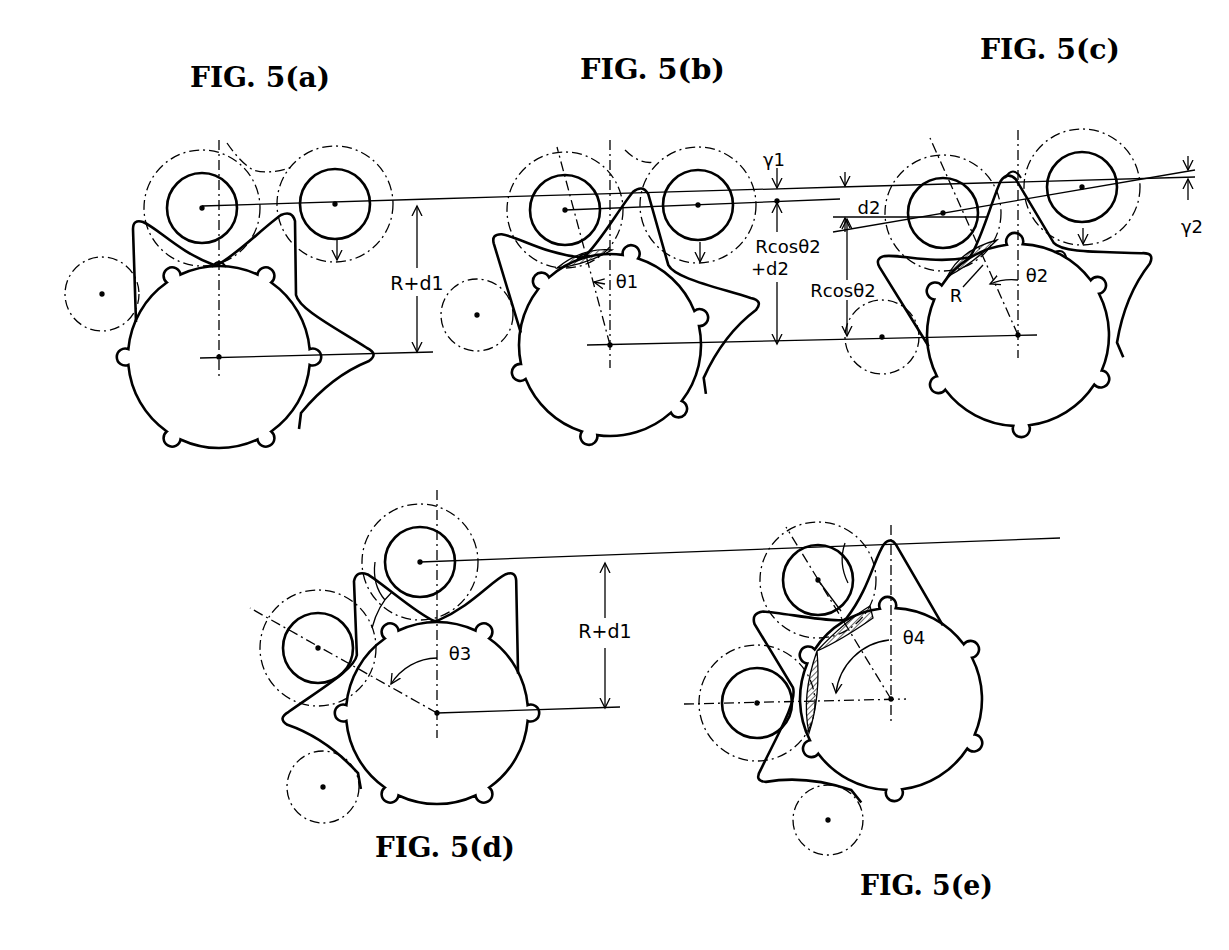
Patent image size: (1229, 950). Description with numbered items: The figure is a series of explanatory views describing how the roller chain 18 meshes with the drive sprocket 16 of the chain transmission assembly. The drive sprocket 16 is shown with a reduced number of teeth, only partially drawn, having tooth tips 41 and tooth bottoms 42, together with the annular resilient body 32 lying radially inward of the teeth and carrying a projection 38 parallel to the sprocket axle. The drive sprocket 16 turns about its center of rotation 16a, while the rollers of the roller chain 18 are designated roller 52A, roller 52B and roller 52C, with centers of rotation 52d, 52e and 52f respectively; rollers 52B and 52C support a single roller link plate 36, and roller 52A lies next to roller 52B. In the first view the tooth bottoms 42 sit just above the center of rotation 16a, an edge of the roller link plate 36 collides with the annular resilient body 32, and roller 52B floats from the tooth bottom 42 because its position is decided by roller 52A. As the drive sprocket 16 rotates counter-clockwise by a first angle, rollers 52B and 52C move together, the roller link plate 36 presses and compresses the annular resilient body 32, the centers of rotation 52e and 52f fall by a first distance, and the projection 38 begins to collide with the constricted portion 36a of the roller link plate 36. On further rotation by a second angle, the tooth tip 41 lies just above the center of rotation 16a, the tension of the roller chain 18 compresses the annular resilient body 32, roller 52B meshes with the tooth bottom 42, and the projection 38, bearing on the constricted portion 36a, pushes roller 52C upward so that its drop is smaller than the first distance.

In FIG. 5A, the drive sprocket 16 is at (308, 405).
In FIG. 5B, the drive sprocket 16 is at (708, 369).
In FIG. 5C, the drive sprocket 16 is at (1126, 319).
In FIG. 5D, the drive sprocket 16 is at (522, 645).
In FIG. 5E, the drive sprocket 16 is at (940, 603).
In FIG. 5A, the center of rotation 16a is at (217, 358).
In FIG. 5B, the center of rotation 16a is at (607, 350).
In FIG. 5C, the center of rotation 16a is at (1015, 337).
In FIG. 5D, the center of rotation 16a is at (433, 717).
In FIG. 5E, the center of rotation 16a is at (889, 706).
In FIG. 5A, the roller chain 18 is at (361, 189).
In FIG. 5B, the roller chain 18 is at (703, 185).
In FIG. 5C, the roller chain 18 is at (1106, 171).
In FIG. 5D, the roller chain 18 is at (427, 545).
In FIG. 5E, the roller chain 18 is at (816, 560).
In FIG. 5A, the annular resilient body 32 is at (157, 430).
In FIG. 5B, the annular resilient body 32 is at (537, 403).
In FIG. 5C, the annular resilient body 32 is at (963, 409).
In FIG. 5D, the annular resilient body 32 is at (508, 779).
In FIG. 5E, the annular resilient body 32 is at (960, 765).
In FIG. 5A, the roller link plate 36 is at (270, 162).
In FIG. 5B, the roller link plate 36 is at (647, 160).
In FIG. 5A, the constricted portion 36a is at (207, 268).
In FIG. 5B, the constricted portion 36a is at (650, 255).
In FIG. 5C, the constricted portion 36a is at (1053, 252).
In FIG. 5B, the projection 38 is at (606, 176).
In FIG. 5C, the projection 38 is at (1035, 160).
In FIG. 5D, the projection 38 is at (350, 582).
In FIG. 5E, the projection 38 is at (892, 595).
In FIG. 5C, the tooth tip 41 is at (1002, 165).
In FIG. 5A, the tooth bottom 42 is at (249, 165).
In FIG. 5C, the tooth bottom 42 is at (961, 165).
In FIG. 5D, the tooth bottom 42 is at (372, 553).
In FIG. 5E, the tooth bottom 42 is at (843, 535).
In FIG. 5A, the roller 52A is at (80, 256).
In FIG. 5B, the roller 52A is at (474, 278).
In FIG. 5C, the roller 52A is at (855, 362).
In FIG. 5D, the roller 52A is at (293, 802).
In FIG. 5E, the roller 52A is at (793, 826).
In FIG. 5A, the roller 52B is at (188, 175).
In FIG. 5B, the roller 52B is at (548, 170).
In FIG. 5C, the roller 52B is at (937, 160).
In FIG. 5D, the roller 52B is at (280, 641).
In FIG. 5E, the roller 52B is at (726, 678).
In FIG. 5A, the roller 52C is at (337, 168).
In FIG. 5B, the roller 52C is at (697, 170).
In FIG. 5C, the roller 52C is at (1055, 135).
In FIG. 5D, the roller 52C is at (460, 545).
In FIG. 5E, the roller 52C is at (811, 538).
In FIG. 5A, the center of rotation 52d is at (103, 296).
In FIG. 5A, the center of rotation 52e is at (203, 208).
In FIG. 5B, the center of rotation 52e is at (563, 207).
In FIG. 5C, the center of rotation 52e is at (930, 212).
In FIG. 5D, the center of rotation 52e is at (316, 650).
In FIG. 5A, the center of rotation 52f is at (338, 203).
In FIG. 5B, the center of rotation 52f is at (700, 204).
In FIG. 5C, the center of rotation 52f is at (1090, 183).
In FIG. 5D, the center of rotation 52f is at (405, 545).
In FIG. 5E, the center of rotation 52f is at (818, 581).